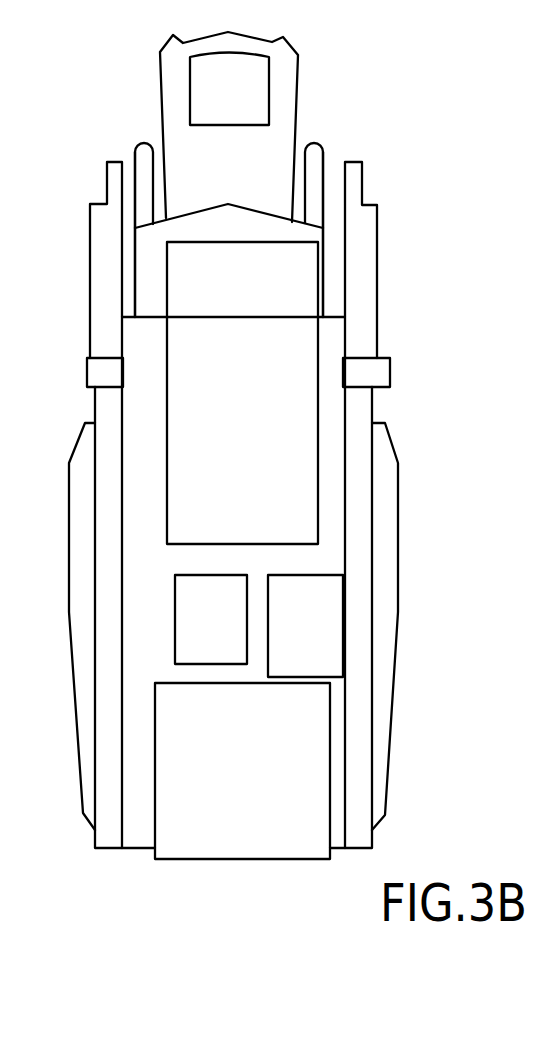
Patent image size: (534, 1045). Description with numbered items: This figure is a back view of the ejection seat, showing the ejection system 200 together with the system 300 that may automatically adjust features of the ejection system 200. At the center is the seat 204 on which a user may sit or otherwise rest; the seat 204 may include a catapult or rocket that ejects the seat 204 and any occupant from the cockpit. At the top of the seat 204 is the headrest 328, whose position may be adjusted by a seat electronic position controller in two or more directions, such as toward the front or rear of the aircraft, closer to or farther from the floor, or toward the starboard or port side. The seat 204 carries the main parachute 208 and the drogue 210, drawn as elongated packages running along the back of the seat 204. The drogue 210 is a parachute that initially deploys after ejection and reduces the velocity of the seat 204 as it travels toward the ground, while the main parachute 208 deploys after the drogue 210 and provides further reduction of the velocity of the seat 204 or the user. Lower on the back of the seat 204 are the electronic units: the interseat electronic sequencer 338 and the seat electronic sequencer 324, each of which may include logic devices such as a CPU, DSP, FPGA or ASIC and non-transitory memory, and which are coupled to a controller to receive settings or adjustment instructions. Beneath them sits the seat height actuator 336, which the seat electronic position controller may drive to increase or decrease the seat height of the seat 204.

The system 300 is at (396, 200).
The headrest 328 is at (188, 148).
The ejection system 200 is at (448, 254).
The seat 204 is at (426, 441).
The drogue 210 is at (318, 292).
The main parachute 208 is at (318, 503).
The interseat electronic sequencer 338 is at (185, 626).
The seat electronic sequencer 324 is at (312, 647).
The seat height actuator 336 is at (267, 859).